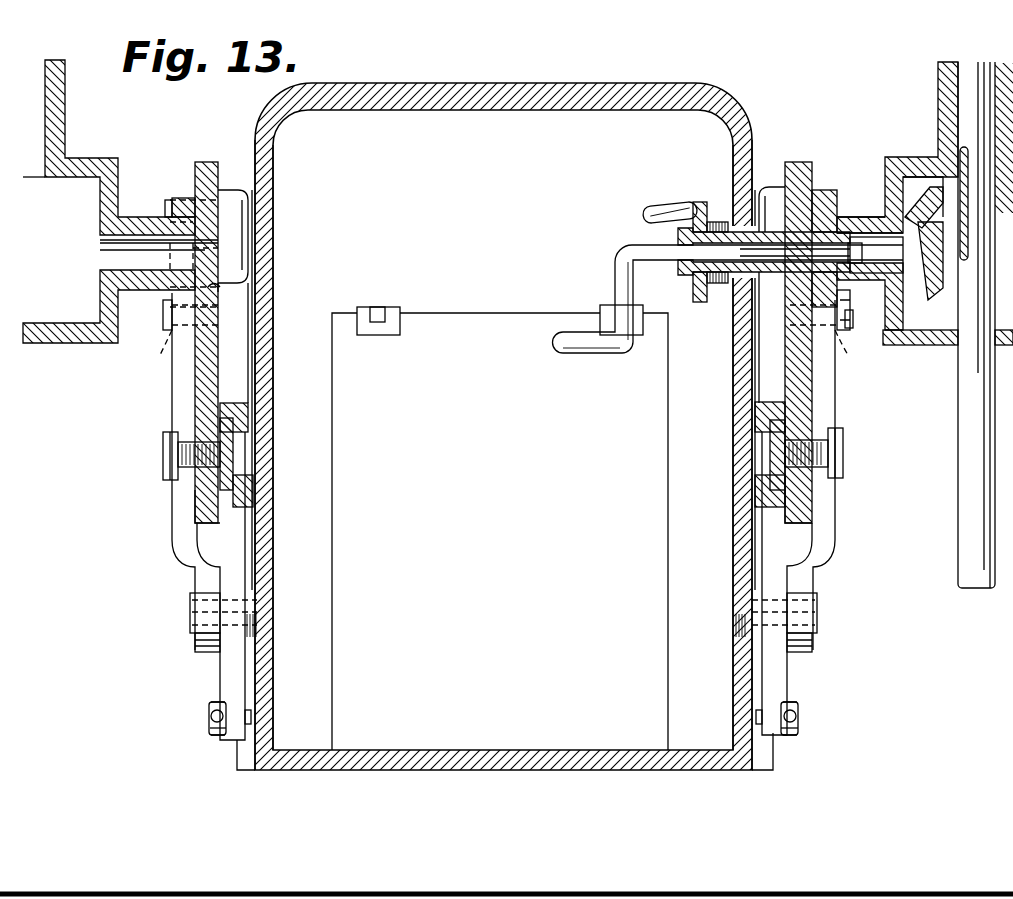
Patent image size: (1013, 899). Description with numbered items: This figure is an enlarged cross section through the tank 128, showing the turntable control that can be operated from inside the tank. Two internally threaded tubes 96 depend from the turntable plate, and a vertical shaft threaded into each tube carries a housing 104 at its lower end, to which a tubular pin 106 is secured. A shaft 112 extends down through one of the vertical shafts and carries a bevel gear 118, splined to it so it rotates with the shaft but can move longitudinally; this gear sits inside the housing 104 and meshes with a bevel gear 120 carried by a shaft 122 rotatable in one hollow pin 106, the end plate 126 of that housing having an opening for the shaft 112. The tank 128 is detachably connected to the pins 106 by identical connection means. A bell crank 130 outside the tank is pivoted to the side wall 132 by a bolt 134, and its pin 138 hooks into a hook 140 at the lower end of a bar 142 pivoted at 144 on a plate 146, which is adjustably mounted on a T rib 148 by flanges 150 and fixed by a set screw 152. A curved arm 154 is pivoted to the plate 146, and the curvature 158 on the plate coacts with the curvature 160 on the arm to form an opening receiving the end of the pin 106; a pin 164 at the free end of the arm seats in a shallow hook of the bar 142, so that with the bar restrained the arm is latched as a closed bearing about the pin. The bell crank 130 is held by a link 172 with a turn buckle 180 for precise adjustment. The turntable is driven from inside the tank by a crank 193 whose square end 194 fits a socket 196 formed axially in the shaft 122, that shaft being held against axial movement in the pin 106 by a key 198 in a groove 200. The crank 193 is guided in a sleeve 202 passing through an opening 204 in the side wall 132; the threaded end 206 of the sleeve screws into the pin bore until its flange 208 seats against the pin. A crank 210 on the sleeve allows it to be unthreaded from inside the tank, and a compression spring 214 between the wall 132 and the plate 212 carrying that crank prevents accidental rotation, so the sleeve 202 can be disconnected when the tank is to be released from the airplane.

The internally threaded tube 96 is at (66, 96).
The housing 104 is at (92, 158).
The tubular pin 106 is at (129, 297).
The shaft 112 is at (965, 410).
The bevel gear 118 is at (935, 197).
The bevel gear 120 is at (915, 295).
The shaft 122 is at (870, 232).
The end plate 126 is at (910, 345).
The tank 128 is at (470, 81).
The bell crank 130 is at (230, 677).
The side wall 132 is at (262, 358).
The bolt 134 is at (262, 616).
The pin 138 is at (192, 606).
The hook 140 is at (200, 645).
The bar 142 is at (183, 553).
The pivot 144 is at (164, 351).
The plate 146 is at (200, 500).
The T rib 148 is at (236, 456).
The flange 150 is at (233, 416).
The set screw 152 is at (165, 455).
The curved arm 154 is at (205, 162).
The curvature 158 is at (214, 288).
The curvature 160 is at (215, 224).
The pin 164 is at (165, 205).
The link 172 is at (210, 722).
The turn buckle 180 is at (209, 710).
The crank 193 is at (632, 246).
The square end 194 is at (780, 285).
The socket 196 is at (818, 232).
The key 198 is at (846, 295).
The groove 200 is at (863, 250).
The sleeve 202 is at (703, 301).
The opening 204 is at (728, 285).
The threaded end 206 is at (817, 230).
The flange 208 is at (774, 200).
The crank 210 is at (650, 205).
The plate 212 is at (694, 208).
The compression spring 214 is at (713, 222).